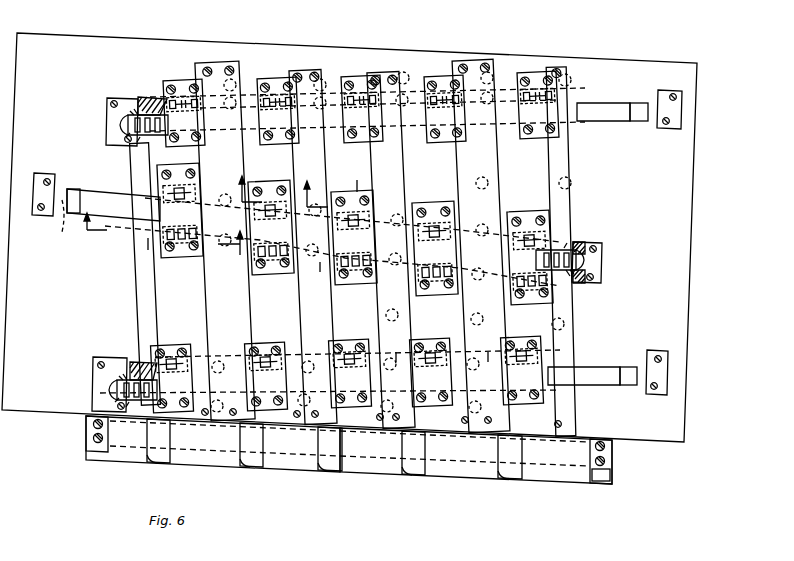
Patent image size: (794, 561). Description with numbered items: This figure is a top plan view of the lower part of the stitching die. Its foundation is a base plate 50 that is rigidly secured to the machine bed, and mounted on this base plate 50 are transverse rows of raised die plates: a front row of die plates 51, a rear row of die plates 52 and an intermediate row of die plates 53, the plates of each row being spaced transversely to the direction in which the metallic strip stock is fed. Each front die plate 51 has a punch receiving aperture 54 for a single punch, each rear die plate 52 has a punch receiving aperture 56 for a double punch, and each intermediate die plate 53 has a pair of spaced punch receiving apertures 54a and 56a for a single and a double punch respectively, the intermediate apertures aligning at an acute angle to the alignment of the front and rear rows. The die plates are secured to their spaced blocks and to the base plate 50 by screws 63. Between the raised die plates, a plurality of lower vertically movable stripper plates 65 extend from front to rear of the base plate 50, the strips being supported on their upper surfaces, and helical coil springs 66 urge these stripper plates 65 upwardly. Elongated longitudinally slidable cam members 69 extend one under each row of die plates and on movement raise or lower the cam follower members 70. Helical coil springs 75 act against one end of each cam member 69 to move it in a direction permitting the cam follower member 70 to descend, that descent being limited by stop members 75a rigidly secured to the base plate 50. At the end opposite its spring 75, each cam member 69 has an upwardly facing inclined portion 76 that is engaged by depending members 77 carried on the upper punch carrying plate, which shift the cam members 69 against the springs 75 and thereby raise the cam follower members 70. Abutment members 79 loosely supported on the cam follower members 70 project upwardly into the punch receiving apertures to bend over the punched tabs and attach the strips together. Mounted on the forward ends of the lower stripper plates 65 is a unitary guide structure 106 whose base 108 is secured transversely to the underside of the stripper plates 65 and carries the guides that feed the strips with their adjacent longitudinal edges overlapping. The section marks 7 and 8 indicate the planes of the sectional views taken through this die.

The base plate 50 is at (625, 66).
The front row of die plates 51 is at (355, 342).
The rear row of die plates 52 is at (190, 82).
The intermediate row of die plates 53 is at (188, 171).
The punch receiving aperture 54 is at (346, 372).
The punch receiving aperture 54a is at (354, 218).
The punch receiving aperture 56 is at (185, 92).
The punch receiving aperture 56a is at (180, 258).
The screws 63 is at (288, 82).
The lower stripper plates 65 is at (262, 48).
The helical coil springs 66 is at (237, 75).
The cam members 69 is at (121, 196).
The cam follower members 70 is at (148, 97).
The helical coil springs 75 is at (124, 126).
The stop members 75a is at (683, 107).
The upwardly facing inclined portion 76 is at (76, 188).
The depending members 77 is at (53, 239).
The abutment members 79 is at (146, 244).
The section line 7- 7 is at (159, 244).
The section line 8- 8 is at (283, 181).
The guide structure 106 is at (324, 470).
The base 108 is at (461, 472).